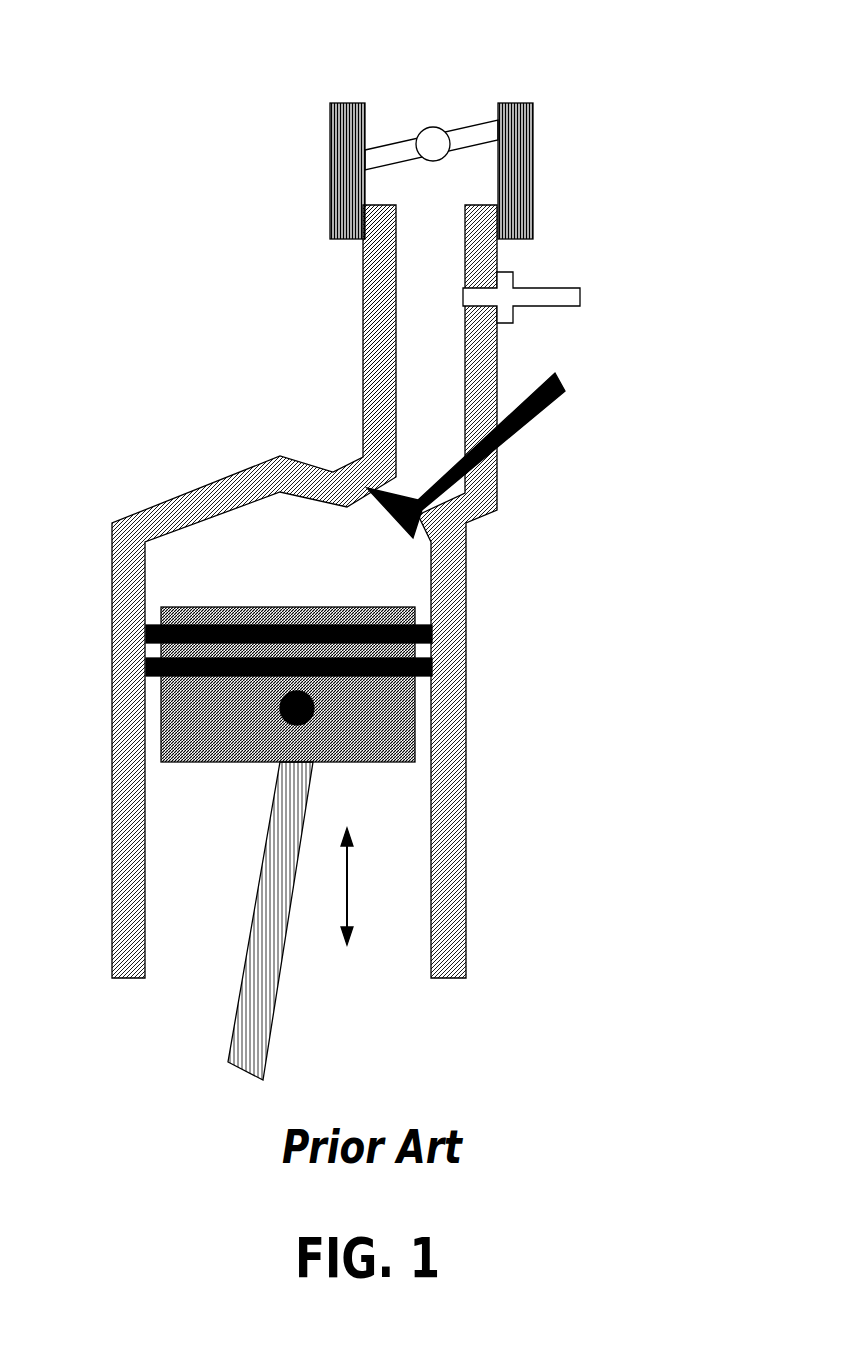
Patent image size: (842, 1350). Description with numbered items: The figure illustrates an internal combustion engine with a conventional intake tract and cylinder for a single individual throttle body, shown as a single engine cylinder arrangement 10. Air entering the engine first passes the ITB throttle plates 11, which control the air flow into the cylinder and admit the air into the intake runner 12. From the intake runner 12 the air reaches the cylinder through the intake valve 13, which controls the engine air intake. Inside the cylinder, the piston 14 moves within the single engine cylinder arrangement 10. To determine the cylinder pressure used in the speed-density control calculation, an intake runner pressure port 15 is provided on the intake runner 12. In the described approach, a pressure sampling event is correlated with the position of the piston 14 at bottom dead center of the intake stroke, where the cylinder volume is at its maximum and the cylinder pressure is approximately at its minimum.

The single engine cylinder arrangement 10 is at (280, 546).
The ITB throttle plates 11 is at (480, 120).
The intake runner 12 is at (358, 345).
The intake valve 13 is at (528, 423).
The piston 14 is at (225, 768).
The intake runner pressure port 15 is at (567, 288).